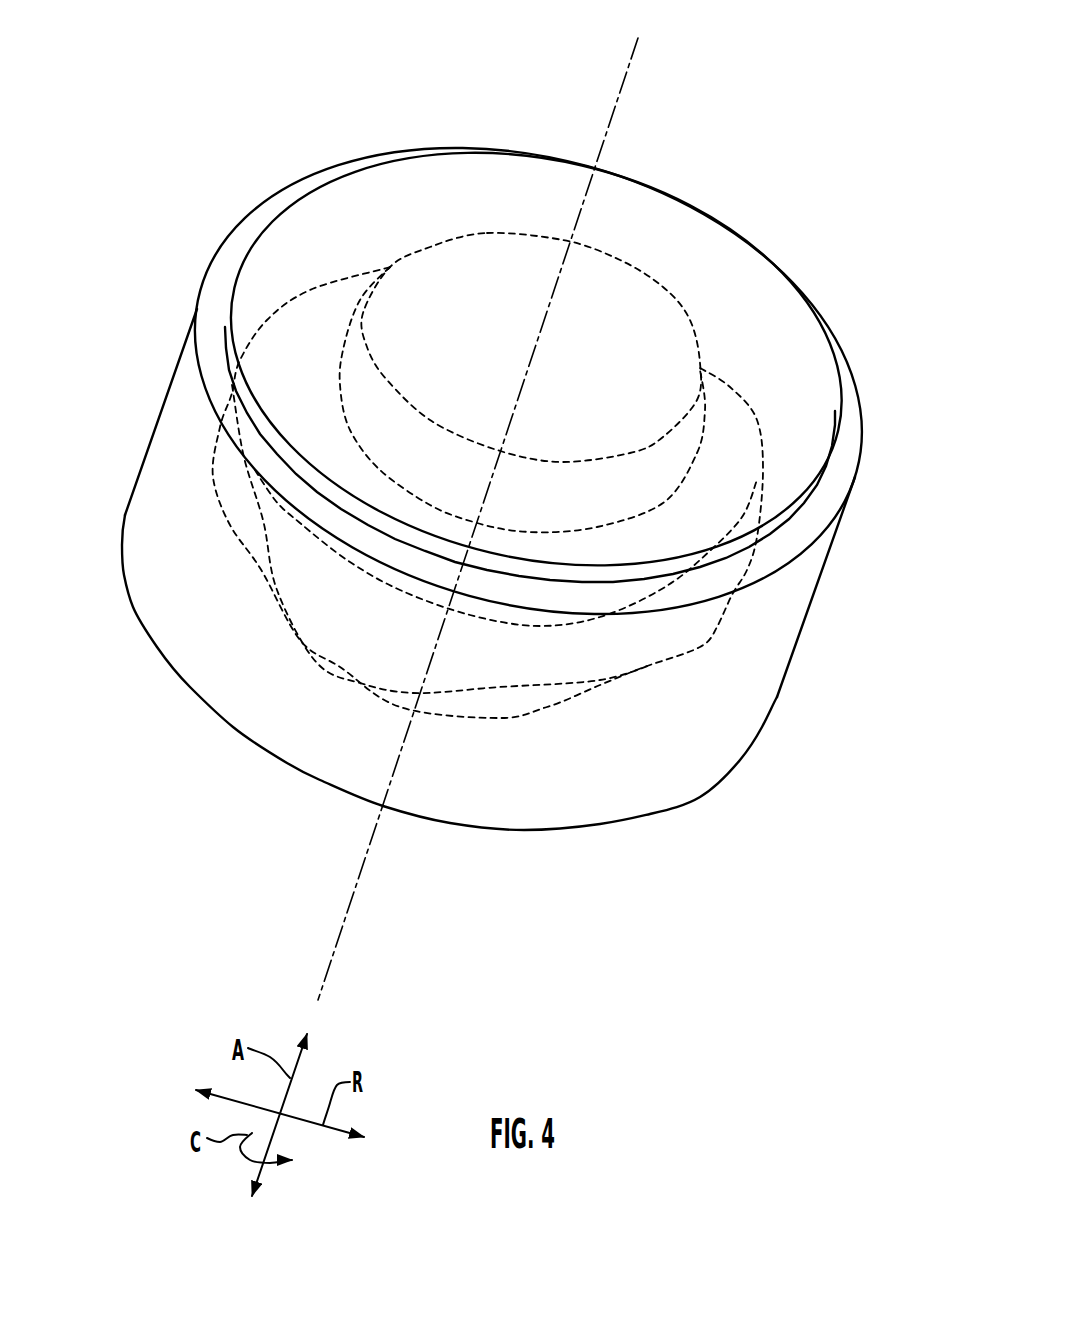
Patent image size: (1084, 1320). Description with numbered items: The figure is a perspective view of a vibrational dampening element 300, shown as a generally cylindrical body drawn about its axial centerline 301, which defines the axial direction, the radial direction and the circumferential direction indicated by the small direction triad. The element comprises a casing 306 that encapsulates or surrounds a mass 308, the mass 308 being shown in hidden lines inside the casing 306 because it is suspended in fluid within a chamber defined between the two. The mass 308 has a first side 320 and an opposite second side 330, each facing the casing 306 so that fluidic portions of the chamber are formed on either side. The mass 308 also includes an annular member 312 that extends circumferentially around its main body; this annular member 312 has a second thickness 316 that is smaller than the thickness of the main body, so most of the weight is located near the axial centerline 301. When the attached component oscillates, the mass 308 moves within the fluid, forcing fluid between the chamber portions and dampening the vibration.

The vibrational dampening element 300 is at (204, 113).
The axial centerline 301 is at (622, 93).
The casing 306 is at (802, 575).
The mass 308 is at (172, 383).
The annular member 312 is at (717, 627).
The second thickness 316 is at (650, 462).
The first side 320 is at (307, 322).
The second side 330 is at (257, 570).